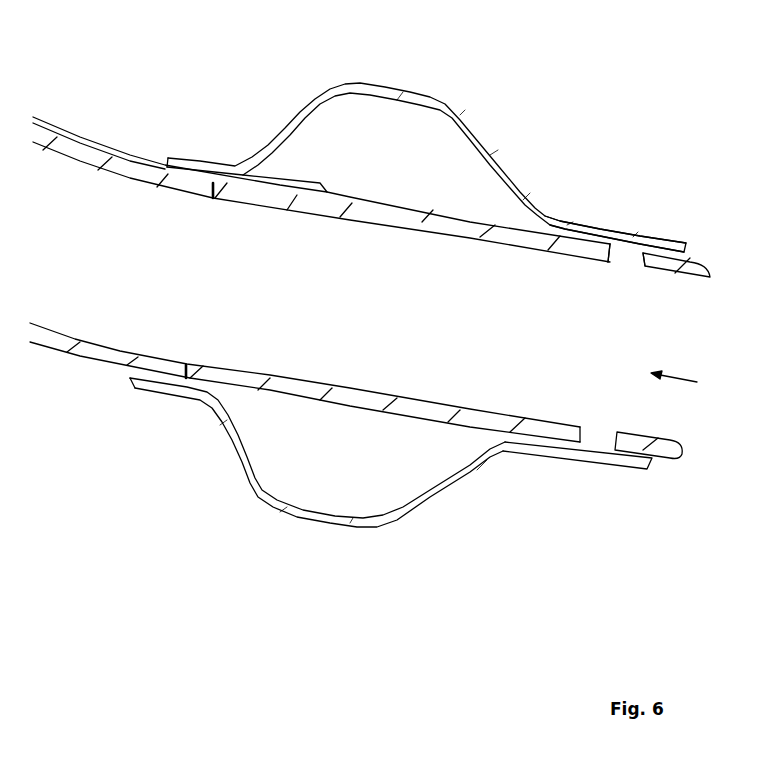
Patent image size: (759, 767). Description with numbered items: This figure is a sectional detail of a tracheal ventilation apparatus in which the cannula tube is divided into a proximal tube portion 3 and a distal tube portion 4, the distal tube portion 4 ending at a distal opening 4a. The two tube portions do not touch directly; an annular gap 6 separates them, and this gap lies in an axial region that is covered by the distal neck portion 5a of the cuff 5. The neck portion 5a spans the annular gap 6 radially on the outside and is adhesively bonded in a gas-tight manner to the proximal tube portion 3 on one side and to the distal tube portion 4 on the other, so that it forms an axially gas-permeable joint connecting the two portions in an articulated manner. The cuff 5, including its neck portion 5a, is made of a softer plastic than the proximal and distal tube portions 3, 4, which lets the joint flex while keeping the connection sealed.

The proximal tube portion 3 is at (117, 353).
The distal tube portion 4 is at (702, 267).
The distal opening 4a is at (691, 385).
The cuff 5 is at (423, 100).
The neck portion 5a is at (605, 228).
The annular gap 6 is at (630, 262).